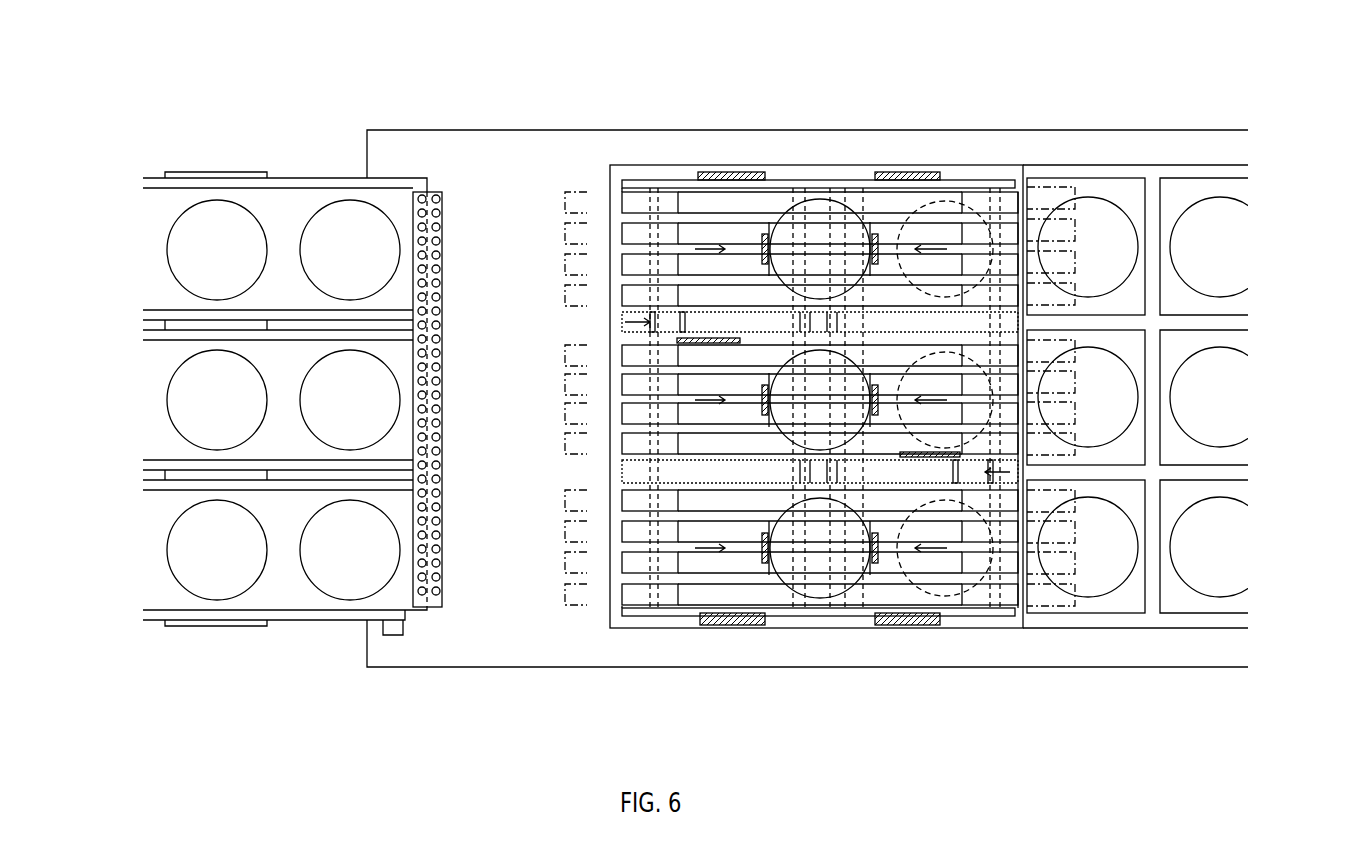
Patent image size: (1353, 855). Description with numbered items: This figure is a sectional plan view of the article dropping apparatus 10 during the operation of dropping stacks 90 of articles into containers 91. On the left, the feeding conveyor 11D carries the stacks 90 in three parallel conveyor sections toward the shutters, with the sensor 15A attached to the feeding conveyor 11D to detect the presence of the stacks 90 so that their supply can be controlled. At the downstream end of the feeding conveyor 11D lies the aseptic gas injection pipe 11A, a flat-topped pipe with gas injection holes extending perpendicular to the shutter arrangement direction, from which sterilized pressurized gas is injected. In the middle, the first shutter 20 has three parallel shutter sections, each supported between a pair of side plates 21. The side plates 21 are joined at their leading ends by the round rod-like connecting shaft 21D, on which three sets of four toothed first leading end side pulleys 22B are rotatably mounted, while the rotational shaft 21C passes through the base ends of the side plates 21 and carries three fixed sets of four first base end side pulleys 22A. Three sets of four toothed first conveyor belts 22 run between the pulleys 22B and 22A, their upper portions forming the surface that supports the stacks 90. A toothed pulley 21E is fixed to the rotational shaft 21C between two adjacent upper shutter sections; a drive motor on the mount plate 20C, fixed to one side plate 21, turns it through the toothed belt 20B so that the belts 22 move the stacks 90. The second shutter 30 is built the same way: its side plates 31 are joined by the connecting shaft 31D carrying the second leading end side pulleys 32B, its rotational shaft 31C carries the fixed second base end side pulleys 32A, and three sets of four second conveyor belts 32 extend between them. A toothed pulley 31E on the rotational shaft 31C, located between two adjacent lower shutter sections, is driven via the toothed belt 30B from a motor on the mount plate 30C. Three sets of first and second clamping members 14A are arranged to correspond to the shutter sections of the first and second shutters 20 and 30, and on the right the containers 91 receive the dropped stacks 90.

The article dropping apparatus 10 is at (597, 62).
The aseptic gas injection pipe 11A is at (435, 192).
The feeding conveyor 11D is at (282, 208).
The sensor 15A is at (393, 636).
The stack 90 is at (205, 555).
The container 91 is at (1138, 195).
The first shutter 20 is at (712, 188).
The side plate 21 is at (700, 190).
The rotational shaft 21C is at (650, 200).
The connecting shaft 21D is at (808, 195).
The toothed pulley 21E is at (660, 322).
The first conveyor belt 22 is at (622, 263).
The first base end side pulley 22A is at (630, 195).
The first leading end side pulley 22B is at (790, 195).
The toothed belt 20B is at (622, 322).
The mount plate 20C is at (690, 340).
The first and second clamping members 14A is at (760, 237).
The second shutter 30 is at (888, 195).
The side plate 31 is at (918, 626).
The rotational shaft 31C is at (990, 195).
The connecting shaft 31D is at (830, 195).
The toothed pulley 31E is at (972, 483).
The second conveyor belt 32 is at (1020, 262).
The second base end side pulley 32A is at (975, 195).
The second leading end side pulley 32B is at (865, 195).
The toothed belt 30B is at (1010, 478).
The mount plate 30C is at (935, 457).